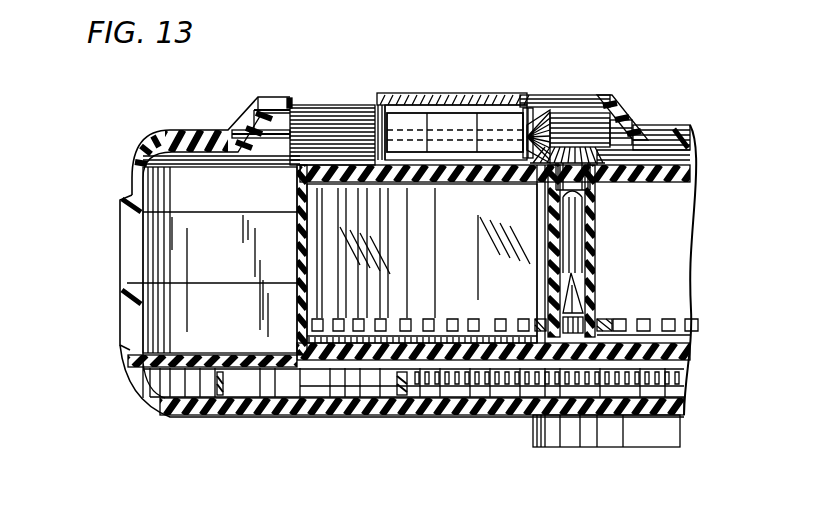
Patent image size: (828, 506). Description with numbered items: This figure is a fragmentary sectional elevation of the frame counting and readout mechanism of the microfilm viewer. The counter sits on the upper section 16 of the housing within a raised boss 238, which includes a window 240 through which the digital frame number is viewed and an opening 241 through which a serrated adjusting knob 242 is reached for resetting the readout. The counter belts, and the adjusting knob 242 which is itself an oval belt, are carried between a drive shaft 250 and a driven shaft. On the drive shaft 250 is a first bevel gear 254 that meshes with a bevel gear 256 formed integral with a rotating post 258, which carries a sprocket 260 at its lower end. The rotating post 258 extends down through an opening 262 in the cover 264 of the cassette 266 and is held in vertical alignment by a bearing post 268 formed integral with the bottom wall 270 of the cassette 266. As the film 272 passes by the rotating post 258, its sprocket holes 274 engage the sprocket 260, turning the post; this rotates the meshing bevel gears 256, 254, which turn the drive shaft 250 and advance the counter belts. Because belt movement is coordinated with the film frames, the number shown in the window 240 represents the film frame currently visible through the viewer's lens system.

The upper section 16 is at (131, 162).
The raised boss 238 is at (247, 113).
The opening 241 is at (293, 102).
The serrated adjusting knob 242 is at (338, 123).
The window 240 is at (496, 97).
The first bevel gear 254 is at (540, 113).
The drive shaft 250 is at (603, 109).
The bevel gear 256 is at (631, 168).
The rotating post 258 is at (547, 184).
The cover 264 is at (494, 195).
The film 272 is at (470, 281).
The sprocket holes 274 is at (508, 318).
The cassette 266 is at (297, 256).
The opening 262 is at (597, 188).
The bearing post 268 is at (574, 293).
The sprocket 260 is at (606, 318).
The bottom wall 270 is at (507, 367).